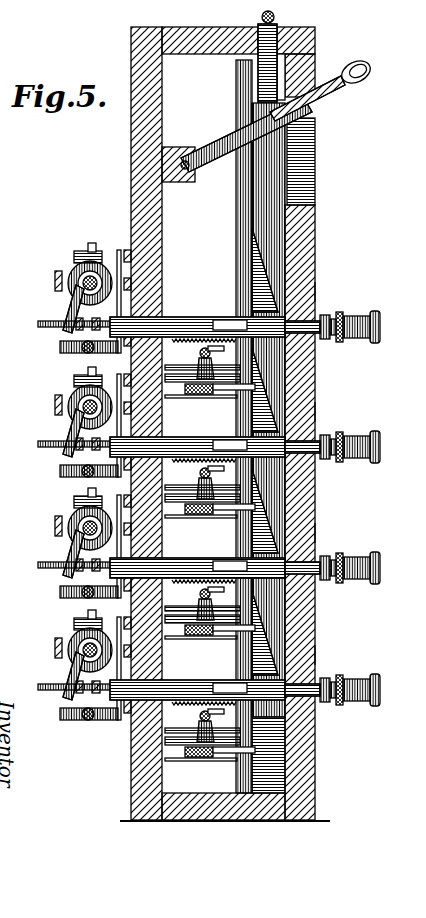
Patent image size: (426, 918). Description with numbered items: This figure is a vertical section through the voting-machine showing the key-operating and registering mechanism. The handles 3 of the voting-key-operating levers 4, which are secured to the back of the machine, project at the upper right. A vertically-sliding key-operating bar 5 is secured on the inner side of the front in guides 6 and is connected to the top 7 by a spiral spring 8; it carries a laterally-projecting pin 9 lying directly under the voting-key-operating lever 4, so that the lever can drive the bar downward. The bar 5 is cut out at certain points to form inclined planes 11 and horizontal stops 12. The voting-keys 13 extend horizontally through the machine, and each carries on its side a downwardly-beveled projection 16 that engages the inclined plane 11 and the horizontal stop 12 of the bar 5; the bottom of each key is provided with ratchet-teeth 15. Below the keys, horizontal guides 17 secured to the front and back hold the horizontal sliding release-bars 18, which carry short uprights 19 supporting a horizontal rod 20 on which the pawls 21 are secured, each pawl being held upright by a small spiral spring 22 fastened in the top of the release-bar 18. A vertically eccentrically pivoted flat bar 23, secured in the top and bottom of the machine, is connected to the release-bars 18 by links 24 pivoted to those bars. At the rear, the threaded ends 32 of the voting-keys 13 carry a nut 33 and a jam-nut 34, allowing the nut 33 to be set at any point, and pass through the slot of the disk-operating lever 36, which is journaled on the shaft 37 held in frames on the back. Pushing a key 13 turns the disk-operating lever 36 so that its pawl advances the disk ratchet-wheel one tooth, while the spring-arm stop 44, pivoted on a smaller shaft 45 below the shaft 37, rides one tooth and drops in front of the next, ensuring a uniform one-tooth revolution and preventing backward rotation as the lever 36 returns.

The handle 3 is at (364, 79).
The voting-key-operating lever 4 is at (230, 160).
The vertically-sliding key-operating bar 5 is at (314, 212).
The guide 6 is at (238, 276).
The top 7 is at (212, 56).
The spiral spring 8 is at (292, 42).
The laterally-projecting pin 9 is at (312, 143).
The inclined plane 11 is at (312, 290).
The horizontal stop 12 is at (316, 342).
The voting-key 13 is at (318, 304).
The ratchet-teeth 15 is at (193, 343).
The downwardly-beveled projection 16 is at (232, 319).
The horizontal guide 17 is at (198, 481).
The horizontal sliding release-bar 18 is at (205, 384).
The short upright 19 is at (198, 601).
The horizontal rod 20 is at (192, 396).
The pawl 21 is at (213, 382).
The small spiral spring 22 is at (131, 350).
The vertically eccentrically pivoted flat bar 23 is at (250, 220).
The link 24 is at (228, 372).
The threaded end 32 is at (52, 326).
The nut 33 is at (94, 474).
The jam-nut 34 is at (70, 474).
The disk-operating lever 36 is at (70, 292).
The shaft 37 is at (98, 272).
The spring-arm stop 44 is at (74, 257).
The smaller shaft 45 is at (82, 353).